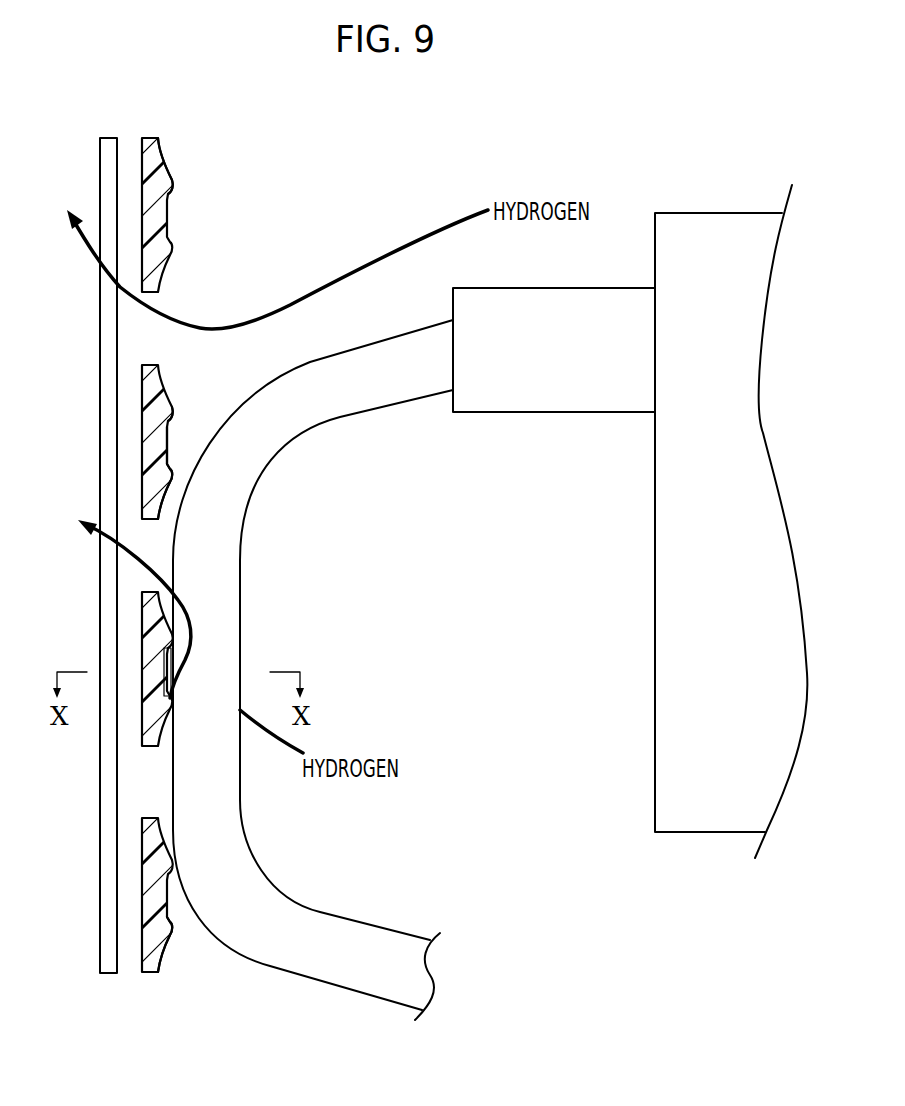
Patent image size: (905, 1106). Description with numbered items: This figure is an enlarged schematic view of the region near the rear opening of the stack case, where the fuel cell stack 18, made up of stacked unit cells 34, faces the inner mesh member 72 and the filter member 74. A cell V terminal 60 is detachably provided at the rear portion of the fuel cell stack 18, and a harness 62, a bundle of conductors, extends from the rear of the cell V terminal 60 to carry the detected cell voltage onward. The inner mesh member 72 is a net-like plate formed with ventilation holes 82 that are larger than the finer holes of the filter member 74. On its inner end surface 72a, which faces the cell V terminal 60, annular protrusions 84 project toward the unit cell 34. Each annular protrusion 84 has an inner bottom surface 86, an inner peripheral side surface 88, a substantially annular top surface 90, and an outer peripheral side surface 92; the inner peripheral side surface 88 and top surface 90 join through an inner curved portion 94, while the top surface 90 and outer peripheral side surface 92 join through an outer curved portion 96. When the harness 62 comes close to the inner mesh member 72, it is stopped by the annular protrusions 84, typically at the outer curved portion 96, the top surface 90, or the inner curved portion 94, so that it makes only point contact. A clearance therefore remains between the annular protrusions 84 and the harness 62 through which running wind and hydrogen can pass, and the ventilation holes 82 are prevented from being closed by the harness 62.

The fuel cell stack 18 is at (731, 504).
The unit cell 34 is at (683, 213).
The cell V terminal 60 is at (570, 400).
The harness 62 is at (391, 406).
The inner mesh member 72 is at (146, 137).
The inner end surface 72a is at (158, 162).
The filter member 74 is at (113, 167).
The ventilation hole 82 is at (150, 365).
The annular protrusion 84 is at (184, 246).
The inner bottom surface 86 is at (167, 438).
The inner peripheral side surface 88 is at (167, 874).
The top surface 90 is at (169, 477).
The outer peripheral side surface 92 is at (163, 488).
The inner curved portion 94 is at (168, 924).
The outer curved portion 96 is at (170, 934).